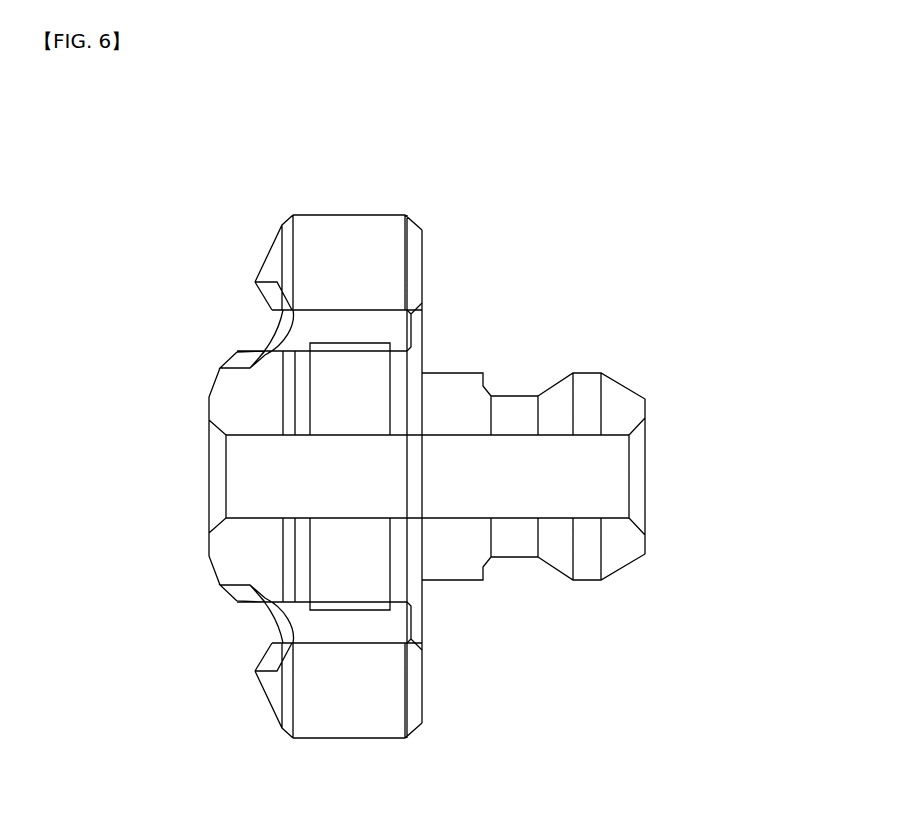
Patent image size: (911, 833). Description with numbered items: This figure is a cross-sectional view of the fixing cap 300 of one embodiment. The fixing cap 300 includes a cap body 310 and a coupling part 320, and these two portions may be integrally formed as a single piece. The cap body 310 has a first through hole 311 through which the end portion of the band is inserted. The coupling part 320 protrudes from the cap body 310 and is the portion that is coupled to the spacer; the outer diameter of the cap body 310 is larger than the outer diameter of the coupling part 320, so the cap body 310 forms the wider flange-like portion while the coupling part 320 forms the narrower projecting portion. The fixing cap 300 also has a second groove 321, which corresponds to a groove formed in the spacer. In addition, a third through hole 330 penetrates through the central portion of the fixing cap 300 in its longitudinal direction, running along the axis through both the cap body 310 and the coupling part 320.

The fixing cap 300 is at (692, 240).
The cap body 310 is at (360, 243).
The first through hole 311 is at (373, 310).
The coupling part 320 is at (620, 403).
The second groove 321 is at (517, 418).
The third through hole 330 is at (592, 517).